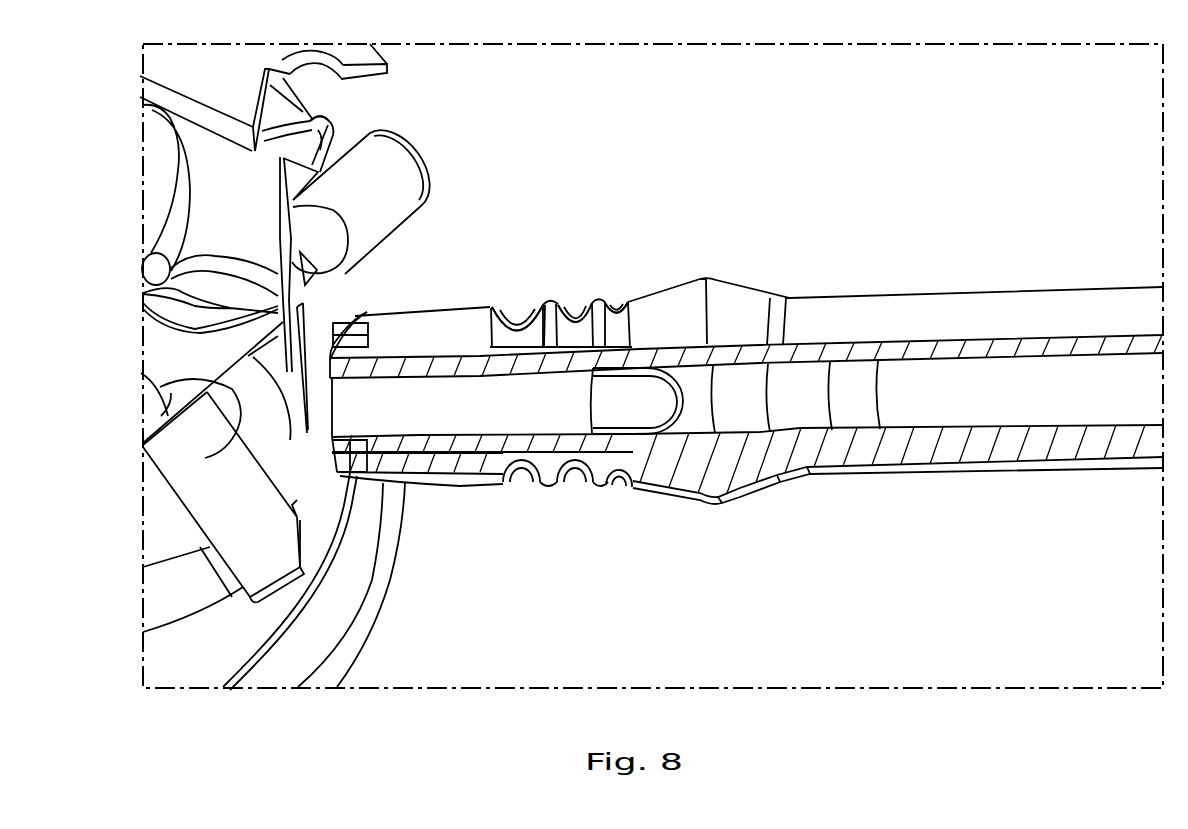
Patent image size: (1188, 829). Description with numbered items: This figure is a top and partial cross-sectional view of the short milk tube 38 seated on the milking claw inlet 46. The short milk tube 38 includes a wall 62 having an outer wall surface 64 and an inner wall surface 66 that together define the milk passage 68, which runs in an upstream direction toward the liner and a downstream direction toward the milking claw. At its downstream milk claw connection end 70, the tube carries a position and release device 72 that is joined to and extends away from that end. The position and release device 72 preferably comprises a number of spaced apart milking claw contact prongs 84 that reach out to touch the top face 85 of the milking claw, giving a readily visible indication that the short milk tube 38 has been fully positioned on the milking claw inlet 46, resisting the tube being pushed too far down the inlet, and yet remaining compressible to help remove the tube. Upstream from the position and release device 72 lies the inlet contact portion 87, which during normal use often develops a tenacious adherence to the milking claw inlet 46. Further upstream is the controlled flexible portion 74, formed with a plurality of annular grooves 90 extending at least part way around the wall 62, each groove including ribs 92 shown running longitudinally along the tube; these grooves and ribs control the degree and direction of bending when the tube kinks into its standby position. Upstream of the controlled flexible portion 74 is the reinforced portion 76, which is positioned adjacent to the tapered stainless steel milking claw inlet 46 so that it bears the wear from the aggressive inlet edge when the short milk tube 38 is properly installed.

The short milk tube 38 is at (900, 318).
The milking claw inlet 46 is at (500, 397).
The wall 62 is at (867, 355).
The outer wall surface 64 is at (1033, 315).
The inner wall surface 66 is at (1092, 350).
The milk passage 68 is at (1066, 403).
The downstream milk claw connection end 70 is at (358, 495).
The position and release device 72 is at (345, 302).
The controlled flexible portion 74 is at (572, 308).
The reinforced portion 76 is at (732, 313).
The milking claw contact prong 84 is at (334, 360).
The top face of the milking claw 85 is at (307, 463).
The inlet contact portion 87 is at (478, 452).
The annular groove 90 is at (623, 505).
The rib 92 is at (517, 315).